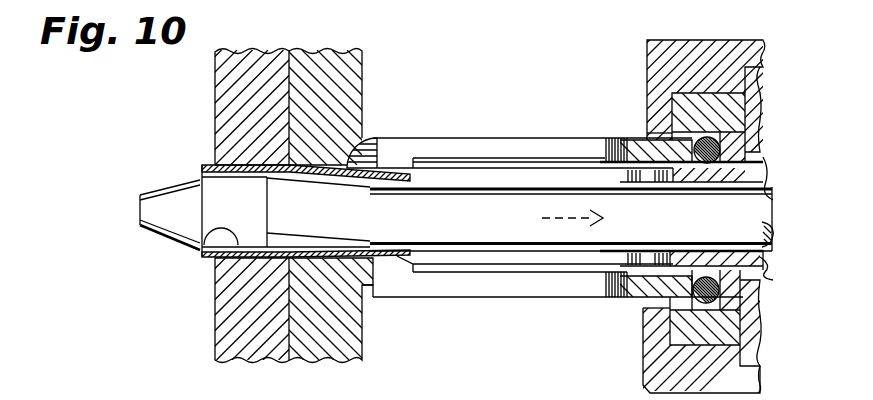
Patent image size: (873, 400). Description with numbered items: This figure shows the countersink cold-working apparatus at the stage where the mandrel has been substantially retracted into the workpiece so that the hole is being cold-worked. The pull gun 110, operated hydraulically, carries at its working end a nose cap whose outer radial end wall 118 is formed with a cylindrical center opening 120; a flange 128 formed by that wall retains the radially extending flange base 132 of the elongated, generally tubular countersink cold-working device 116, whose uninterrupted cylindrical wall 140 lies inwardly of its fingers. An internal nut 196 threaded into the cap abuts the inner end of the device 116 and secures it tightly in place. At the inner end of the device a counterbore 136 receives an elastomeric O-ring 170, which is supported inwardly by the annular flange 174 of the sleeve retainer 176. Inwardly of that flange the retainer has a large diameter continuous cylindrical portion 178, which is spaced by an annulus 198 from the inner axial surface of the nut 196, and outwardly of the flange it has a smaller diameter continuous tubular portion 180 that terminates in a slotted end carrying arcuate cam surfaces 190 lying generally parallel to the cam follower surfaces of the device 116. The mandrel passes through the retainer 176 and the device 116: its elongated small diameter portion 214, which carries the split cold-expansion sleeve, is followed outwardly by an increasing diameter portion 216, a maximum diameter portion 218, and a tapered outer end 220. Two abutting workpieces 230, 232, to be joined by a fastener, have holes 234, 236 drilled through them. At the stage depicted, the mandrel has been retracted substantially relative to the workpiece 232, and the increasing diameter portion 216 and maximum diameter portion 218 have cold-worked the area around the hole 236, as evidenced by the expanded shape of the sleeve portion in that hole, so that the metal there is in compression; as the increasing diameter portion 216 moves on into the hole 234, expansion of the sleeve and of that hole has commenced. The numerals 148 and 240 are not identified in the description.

The pull gun 110 is at (707, 38).
The countersink cold-working device 116 is at (474, 134).
The outer radial end wall 118 is at (647, 72).
The cylindrical center opening 120 is at (657, 133).
The flange 128 is at (672, 108).
The flange base 132 is at (695, 102).
The counterbore 136 is at (672, 131).
The uninterrupted cylindrical wall 140 is at (700, 266).
The collar 148 is at (327, 262).
The O-ring 170 is at (675, 312).
The annular flange 174 is at (690, 345).
The sleeve retainer 176 is at (535, 268).
The large diameter continuous cylindrical portion 178 is at (758, 247).
The generally cylindrical continuous tubular portion 180 is at (695, 300).
The arcuate cam surfaces 190 is at (412, 147).
The internal nut 196 is at (767, 83).
The annulus 198 is at (768, 190).
The small diameter portion 214 is at (470, 220).
The increasing diameter portion 216 is at (332, 220).
The maximum diameter portion 218 is at (255, 218).
The tapered outer end 220 is at (195, 221).
The workpiece 230 is at (323, 60).
The workpiece 232 is at (249, 62).
The hole 234 is at (313, 259).
The hole 236 is at (207, 249).
The flange 240 is at (372, 138).